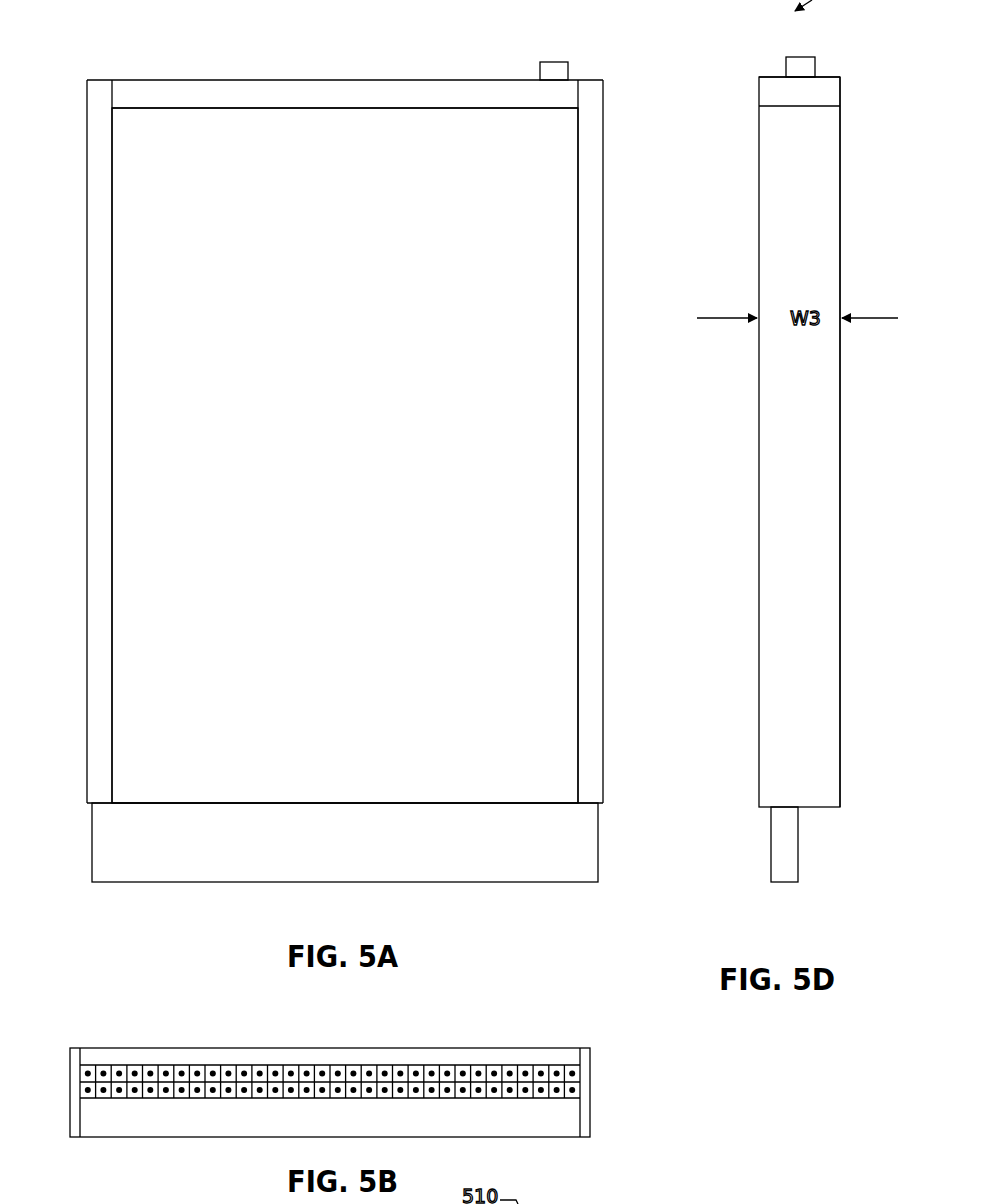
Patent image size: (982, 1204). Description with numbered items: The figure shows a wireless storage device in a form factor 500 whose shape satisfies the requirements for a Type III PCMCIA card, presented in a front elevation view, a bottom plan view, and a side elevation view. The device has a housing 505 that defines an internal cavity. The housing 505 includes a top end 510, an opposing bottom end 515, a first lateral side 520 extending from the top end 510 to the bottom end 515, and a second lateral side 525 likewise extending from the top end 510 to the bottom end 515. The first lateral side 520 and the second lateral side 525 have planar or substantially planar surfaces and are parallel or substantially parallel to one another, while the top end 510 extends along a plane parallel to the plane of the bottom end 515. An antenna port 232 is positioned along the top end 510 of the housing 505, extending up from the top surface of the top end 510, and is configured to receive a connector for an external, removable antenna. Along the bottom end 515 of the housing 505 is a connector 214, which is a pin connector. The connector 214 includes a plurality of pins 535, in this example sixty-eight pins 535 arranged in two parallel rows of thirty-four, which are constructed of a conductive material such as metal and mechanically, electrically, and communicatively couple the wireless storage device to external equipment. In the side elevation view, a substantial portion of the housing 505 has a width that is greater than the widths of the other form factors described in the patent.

In FIG. 5A, the form factor 500 is at (476, 26).
In FIG. 5A, the housing 505 is at (358, 364).
In FIG. 5A, the top end 510 is at (441, 80).
In FIG. 5D, the top end 510 is at (758, 77).
In FIG. 5A, the bottom end 515 is at (343, 883).
In FIG. 5D, the bottom end 515 is at (783, 883).
In FIG. 5B, the bottom end 515 is at (498, 1021).
In FIG. 5A, the first lateral side 520 is at (87, 445).
In FIG. 5D, the first lateral side 520 is at (800, 457).
In FIG. 5A, the second lateral side 525 is at (603, 440).
In FIG. 5D, the second lateral side 525 is at (765, 442).
In FIG. 5A, the antenna port 232 is at (560, 62).
In FIG. 5D, the antenna port 232 is at (815, 57).
In FIG. 5B, the connector 214 is at (182, 1065).
In FIG. 5B, the pins 535 is at (85, 1068).